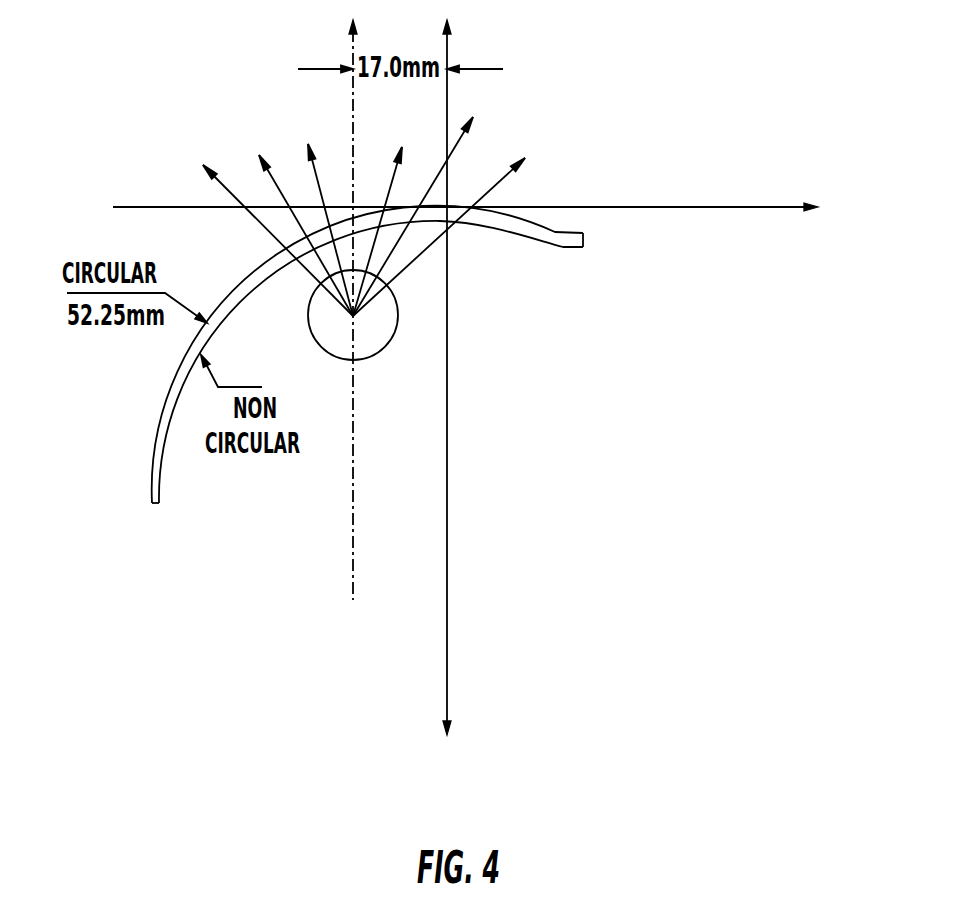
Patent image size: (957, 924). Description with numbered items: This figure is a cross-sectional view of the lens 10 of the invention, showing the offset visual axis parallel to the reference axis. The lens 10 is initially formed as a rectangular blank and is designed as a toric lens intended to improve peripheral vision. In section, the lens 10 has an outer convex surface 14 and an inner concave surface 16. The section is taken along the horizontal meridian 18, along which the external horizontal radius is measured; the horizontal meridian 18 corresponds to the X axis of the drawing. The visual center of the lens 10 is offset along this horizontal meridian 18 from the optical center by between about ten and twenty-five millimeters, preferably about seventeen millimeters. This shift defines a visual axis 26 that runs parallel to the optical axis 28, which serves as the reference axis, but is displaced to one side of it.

The lens 10 is at (340, 280).
The outer convex surface 14 is at (157, 432).
The inner concave surface 16 is at (165, 457).
The horizontal meridian 18 is at (720, 207).
The visual axis 26 is at (356, 582).
The optical axis 28 is at (448, 662).